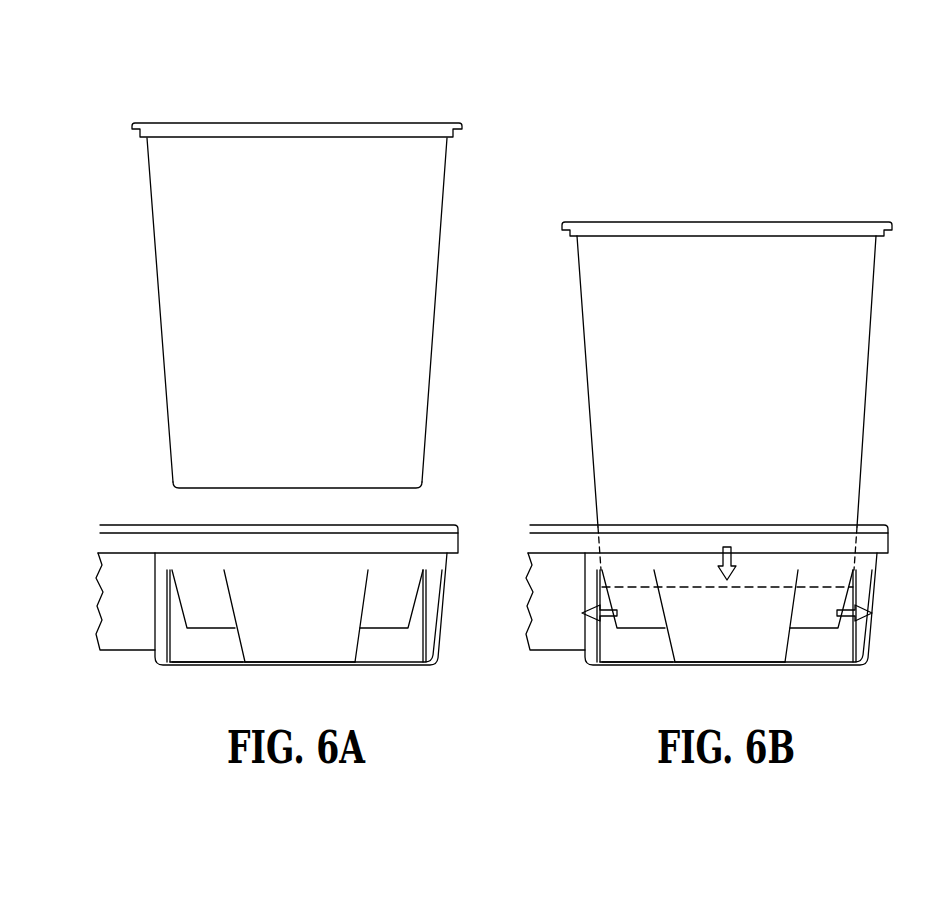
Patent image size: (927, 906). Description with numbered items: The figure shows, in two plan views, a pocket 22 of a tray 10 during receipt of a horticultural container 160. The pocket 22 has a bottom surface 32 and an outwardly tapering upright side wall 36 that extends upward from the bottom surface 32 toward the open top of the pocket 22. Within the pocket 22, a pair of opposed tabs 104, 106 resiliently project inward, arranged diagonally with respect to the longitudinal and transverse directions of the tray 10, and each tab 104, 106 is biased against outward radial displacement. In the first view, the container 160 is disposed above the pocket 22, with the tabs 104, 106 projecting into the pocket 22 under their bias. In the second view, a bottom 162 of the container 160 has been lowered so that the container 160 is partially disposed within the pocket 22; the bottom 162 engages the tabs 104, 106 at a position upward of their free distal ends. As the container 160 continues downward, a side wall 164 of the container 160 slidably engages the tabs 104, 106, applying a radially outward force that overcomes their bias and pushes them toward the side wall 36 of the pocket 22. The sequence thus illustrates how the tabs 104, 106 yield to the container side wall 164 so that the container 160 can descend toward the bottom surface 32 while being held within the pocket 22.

In FIG. 6A, the tray 10 is at (93, 553).
In FIG. 6B, the tray 10 is at (703, 574).
In FIG. 6A, the sixth pocket 22 is at (198, 644).
In FIG. 6B, the sixth pocket 22 is at (615, 673).
In FIG. 6A, the bottom surface 32 is at (378, 668).
In FIG. 6B, the bottom surface 32 is at (732, 644).
In FIG. 6A, the outwardly tapering upright side wall 36 is at (311, 634).
In FIG. 6B, the outwardly tapering upright side wall 36 is at (730, 632).
In FIG. 6A, the tab 104 is at (403, 611).
In FIG. 6B, the tab 104 is at (819, 616).
In FIG. 6A, the tab 106 is at (222, 611).
In FIG. 6B, the tab 106 is at (638, 616).
In FIG. 6A, the horticultural container 160 is at (240, 127).
In FIG. 6B, the horticultural container 160 is at (668, 226).
In FIG. 6A, the bottom of the container 162 is at (425, 489).
In FIG. 6B, the bottom of the container 162 is at (855, 587).
In FIG. 6A, the side wall of the container 164 is at (431, 381).
In FIG. 6B, the side wall of the container 164 is at (868, 527).